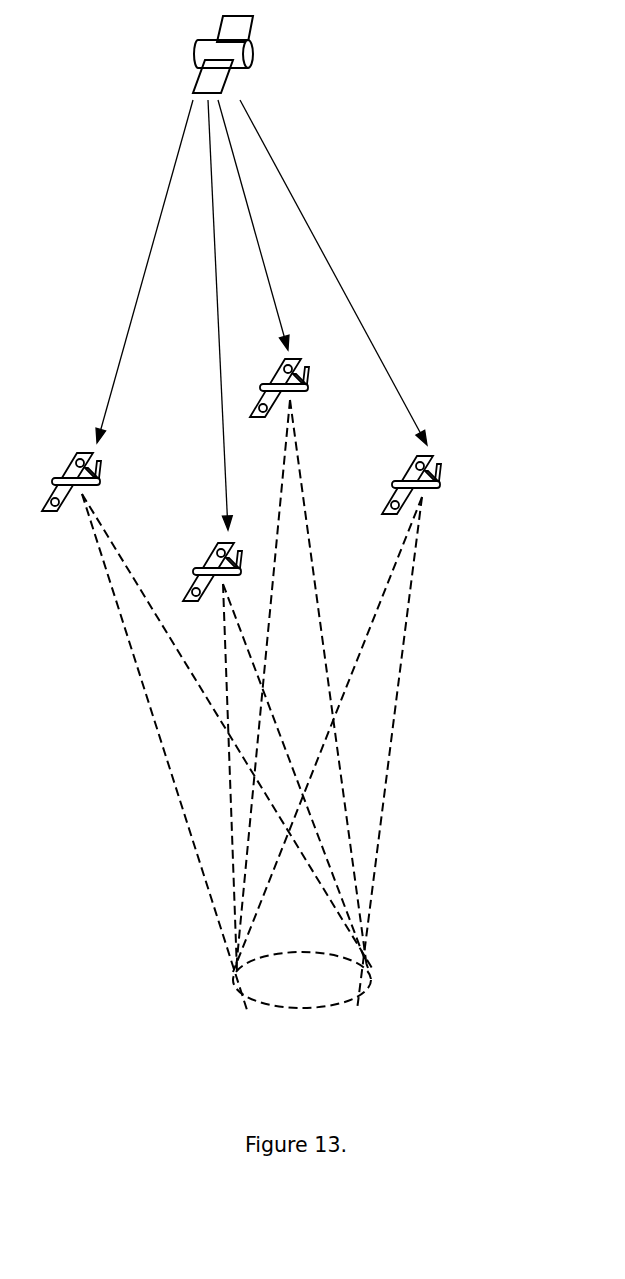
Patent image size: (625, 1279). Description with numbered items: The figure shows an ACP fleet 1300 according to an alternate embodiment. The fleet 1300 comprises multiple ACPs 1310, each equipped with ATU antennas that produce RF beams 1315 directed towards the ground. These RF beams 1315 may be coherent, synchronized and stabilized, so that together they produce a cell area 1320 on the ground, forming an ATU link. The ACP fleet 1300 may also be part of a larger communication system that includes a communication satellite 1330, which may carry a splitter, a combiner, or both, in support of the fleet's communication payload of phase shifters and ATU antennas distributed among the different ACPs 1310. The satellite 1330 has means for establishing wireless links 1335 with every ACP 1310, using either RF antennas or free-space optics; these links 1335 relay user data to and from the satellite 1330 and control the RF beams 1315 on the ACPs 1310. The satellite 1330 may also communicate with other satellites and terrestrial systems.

The ACP fleet 1300 is at (280, 1091).
The ACP 1310 is at (318, 377).
The RF beams 1315 is at (242, 750).
The cell area 1320 is at (302, 965).
The communication satellite 1330 is at (255, 54).
The wireless links 1335 is at (215, 238).